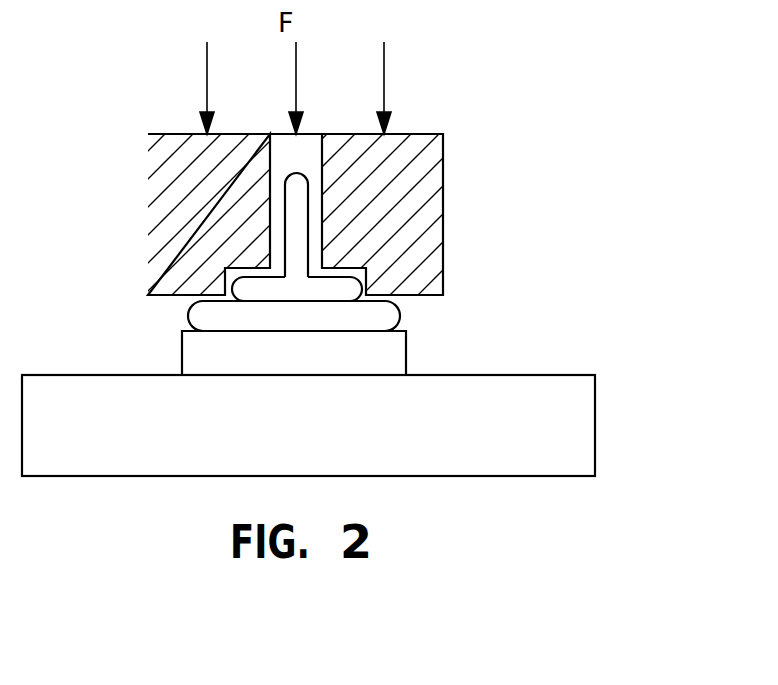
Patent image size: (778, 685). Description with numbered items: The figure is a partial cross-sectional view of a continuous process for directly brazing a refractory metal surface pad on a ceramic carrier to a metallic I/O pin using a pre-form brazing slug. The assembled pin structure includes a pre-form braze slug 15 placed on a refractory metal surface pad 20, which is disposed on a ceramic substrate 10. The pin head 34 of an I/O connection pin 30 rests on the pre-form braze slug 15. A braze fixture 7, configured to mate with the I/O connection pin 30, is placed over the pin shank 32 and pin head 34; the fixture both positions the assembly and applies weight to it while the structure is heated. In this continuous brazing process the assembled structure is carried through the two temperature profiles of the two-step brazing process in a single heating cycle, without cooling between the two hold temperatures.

The braze fixture 7 is at (432, 195).
The ceramic substrate 10 is at (571, 418).
The pre-form braze slug 15 is at (196, 313).
The refractory metal surface pad 20 is at (390, 359).
The I/O connection pin 30 is at (230, 164).
The pin shank 32 is at (290, 203).
The pin head 34 is at (237, 289).